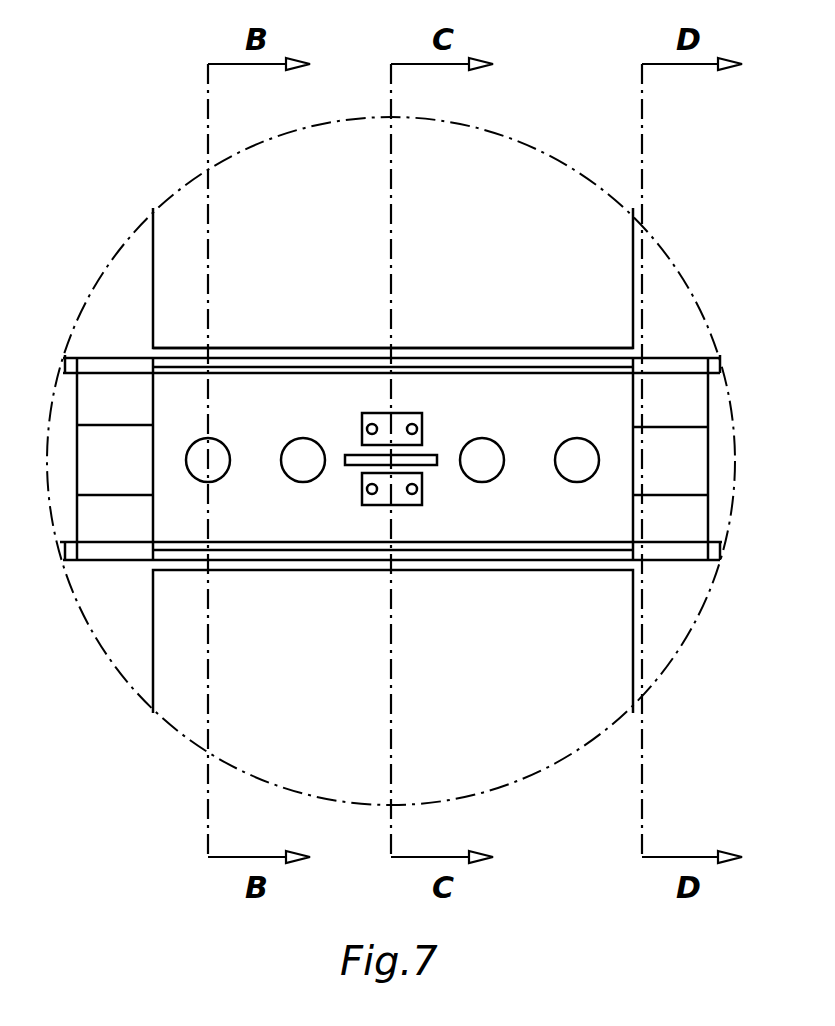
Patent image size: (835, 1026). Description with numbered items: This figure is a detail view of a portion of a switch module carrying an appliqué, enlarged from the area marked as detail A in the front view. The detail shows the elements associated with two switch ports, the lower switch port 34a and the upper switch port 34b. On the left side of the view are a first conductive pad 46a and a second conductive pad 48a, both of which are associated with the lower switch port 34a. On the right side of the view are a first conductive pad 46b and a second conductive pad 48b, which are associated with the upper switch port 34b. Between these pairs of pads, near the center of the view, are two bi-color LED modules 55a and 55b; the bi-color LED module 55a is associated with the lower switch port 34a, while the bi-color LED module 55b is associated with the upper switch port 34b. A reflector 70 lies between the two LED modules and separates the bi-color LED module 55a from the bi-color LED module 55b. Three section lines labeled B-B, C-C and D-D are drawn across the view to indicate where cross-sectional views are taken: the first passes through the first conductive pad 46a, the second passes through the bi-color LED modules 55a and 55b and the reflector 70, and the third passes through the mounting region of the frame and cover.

The lower switch port 34a is at (190, 702).
The upper switch port 34b is at (568, 232).
The first conductive pad 46a is at (208, 482).
The first conductive pad 46b is at (556, 466).
The second conductive pad 48a is at (297, 438).
The second conductive pad 48b is at (494, 441).
The bi-color LED module 55a is at (380, 505).
The bi-color LED module 55b is at (413, 413).
The reflector 70 is at (346, 452).